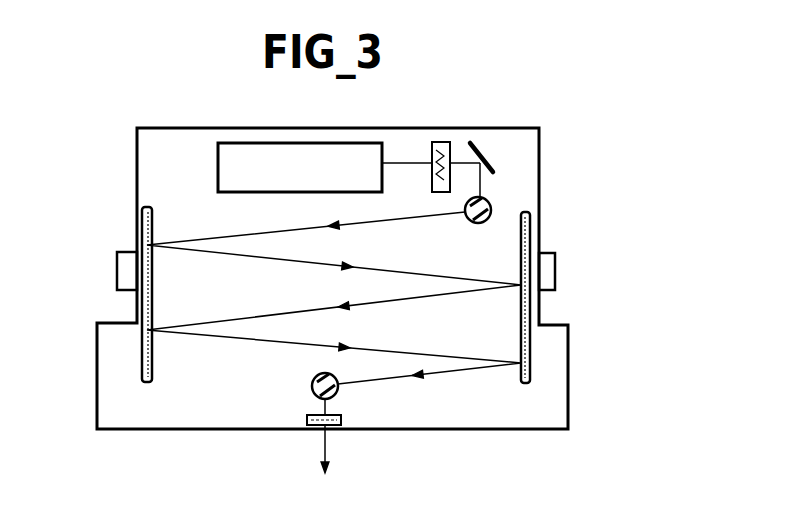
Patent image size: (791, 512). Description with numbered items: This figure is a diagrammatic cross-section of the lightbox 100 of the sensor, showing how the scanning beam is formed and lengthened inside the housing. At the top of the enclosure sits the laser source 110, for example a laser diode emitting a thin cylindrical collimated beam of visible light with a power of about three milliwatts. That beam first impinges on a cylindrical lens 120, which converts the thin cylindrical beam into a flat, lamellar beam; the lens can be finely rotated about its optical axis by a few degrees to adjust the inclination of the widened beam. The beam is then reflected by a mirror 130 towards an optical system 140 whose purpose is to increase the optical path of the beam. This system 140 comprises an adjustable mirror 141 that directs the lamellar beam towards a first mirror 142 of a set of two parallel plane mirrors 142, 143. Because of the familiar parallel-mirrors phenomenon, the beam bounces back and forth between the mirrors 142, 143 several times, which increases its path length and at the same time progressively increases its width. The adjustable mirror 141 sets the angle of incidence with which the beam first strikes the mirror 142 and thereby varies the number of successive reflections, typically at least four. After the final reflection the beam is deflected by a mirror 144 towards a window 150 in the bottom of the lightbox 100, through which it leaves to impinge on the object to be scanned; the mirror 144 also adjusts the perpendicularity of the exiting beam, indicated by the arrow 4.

The lightbox 100 is at (428, 128).
The laser source 110 is at (262, 143).
The cylindrical lens 120 is at (445, 142).
The mirror 130 is at (496, 159).
The optical system 140 is at (583, 252).
The adjustable mirror 141 is at (492, 205).
The first mirror 142 is at (137, 275).
The second mirror 143 is at (555, 285).
The mirror 144 is at (316, 376).
The window 150 is at (310, 428).
The output signal 4 is at (328, 450).